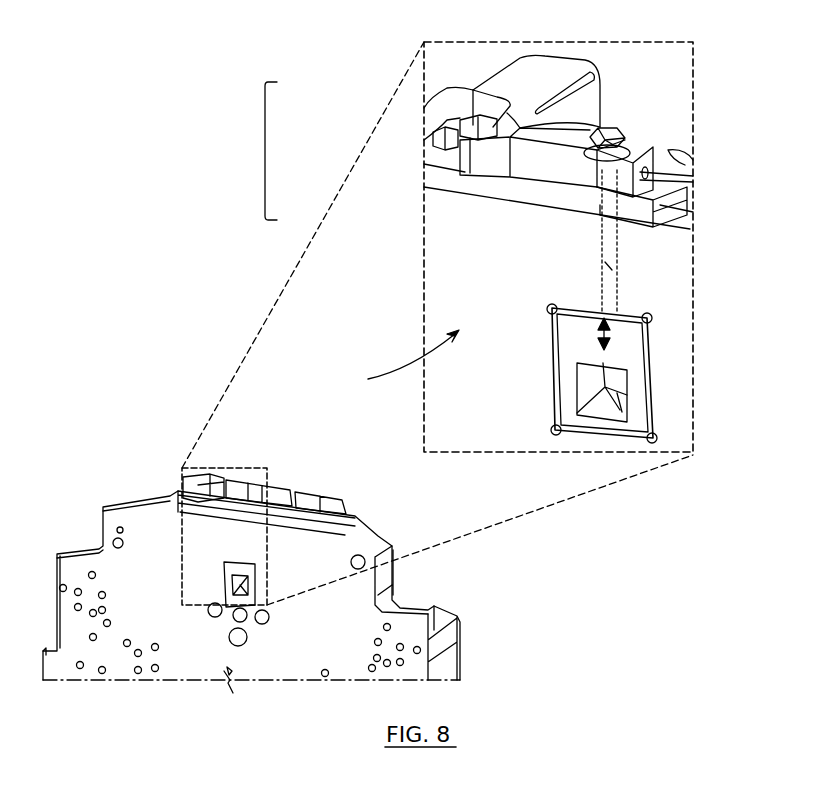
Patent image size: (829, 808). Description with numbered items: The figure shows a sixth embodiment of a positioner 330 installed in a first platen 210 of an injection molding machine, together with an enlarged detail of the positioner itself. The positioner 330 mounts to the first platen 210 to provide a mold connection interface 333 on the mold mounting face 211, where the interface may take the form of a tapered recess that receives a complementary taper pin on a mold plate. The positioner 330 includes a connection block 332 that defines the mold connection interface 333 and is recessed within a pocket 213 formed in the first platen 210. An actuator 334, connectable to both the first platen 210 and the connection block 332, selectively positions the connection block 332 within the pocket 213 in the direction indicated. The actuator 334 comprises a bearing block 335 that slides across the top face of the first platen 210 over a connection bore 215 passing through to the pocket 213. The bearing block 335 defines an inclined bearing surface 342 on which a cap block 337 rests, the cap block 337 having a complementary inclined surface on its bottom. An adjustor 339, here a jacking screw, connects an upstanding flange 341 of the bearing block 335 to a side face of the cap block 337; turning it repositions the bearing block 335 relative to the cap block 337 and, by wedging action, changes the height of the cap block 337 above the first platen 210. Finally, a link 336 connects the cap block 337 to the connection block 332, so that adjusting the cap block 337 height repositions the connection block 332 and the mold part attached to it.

The first platen 210 is at (318, 438).
The mold mounting face 211 is at (167, 533).
The pocket 213 is at (551, 372).
The connection bore 215 is at (602, 246).
The positioner 330 is at (695, 297).
The connection block 332 is at (583, 333).
The mold connection interface 333 is at (620, 387).
The actuator 334 is at (263, 151).
The bearing block 335 is at (460, 162).
The link 336 is at (610, 266).
The cap block 337 is at (430, 130).
The adjustor 339 is at (448, 110).
The upstanding flange 341 is at (493, 90).
The inclined bearing surface 342 is at (685, 168).